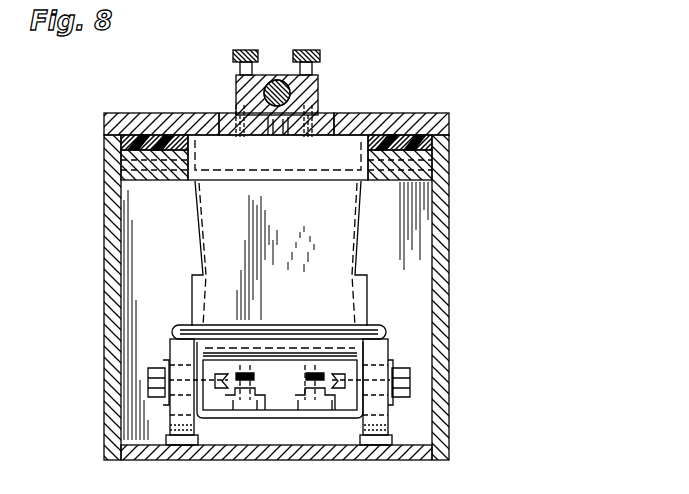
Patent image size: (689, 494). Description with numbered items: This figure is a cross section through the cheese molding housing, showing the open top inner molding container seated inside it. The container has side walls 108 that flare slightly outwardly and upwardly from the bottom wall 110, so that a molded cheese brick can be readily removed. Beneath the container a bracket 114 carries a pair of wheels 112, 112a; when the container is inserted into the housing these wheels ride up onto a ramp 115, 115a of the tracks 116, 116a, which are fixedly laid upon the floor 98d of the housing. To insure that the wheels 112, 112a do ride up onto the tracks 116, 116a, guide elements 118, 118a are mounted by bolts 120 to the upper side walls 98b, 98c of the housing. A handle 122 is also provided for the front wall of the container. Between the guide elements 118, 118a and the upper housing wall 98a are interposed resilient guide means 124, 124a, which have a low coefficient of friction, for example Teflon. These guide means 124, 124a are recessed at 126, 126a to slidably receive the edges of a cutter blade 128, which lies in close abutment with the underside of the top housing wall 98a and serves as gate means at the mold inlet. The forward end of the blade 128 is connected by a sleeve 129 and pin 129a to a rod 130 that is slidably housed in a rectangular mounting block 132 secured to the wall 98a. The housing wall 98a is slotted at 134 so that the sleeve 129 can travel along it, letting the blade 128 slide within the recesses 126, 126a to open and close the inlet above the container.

The upper housing wall 98a is at (370, 130).
The upper side wall 98b is at (104, 190).
The upper side wall 98c is at (449, 225).
The floor 98d is at (315, 440).
The side walls 108 is at (197, 247).
The bottom wall 110 is at (290, 356).
The wheel 112 is at (170, 340).
The wheel 112a is at (388, 342).
The bracket 114 is at (265, 420).
The ramp 115 is at (180, 445).
The ramp 115a is at (380, 445).
The track 116 is at (166, 440).
The track 116a is at (392, 440).
The guide element 118 is at (140, 180).
The guide element 118a is at (418, 180).
The bolts 120 is at (272, 308).
The handle 122 is at (258, 331).
The resilient guide means 124 is at (143, 134).
The resilient guide means 124a is at (449, 120).
The recess 126 is at (176, 140).
The recess 126a is at (410, 134).
The cutter blade 128 is at (303, 101).
The sleeve 129 is at (236, 100).
The pin 129a is at (302, 118).
The rod 130 is at (272, 75).
The rectangular mounting block 132 is at (236, 85).
The slot 134 is at (242, 148).